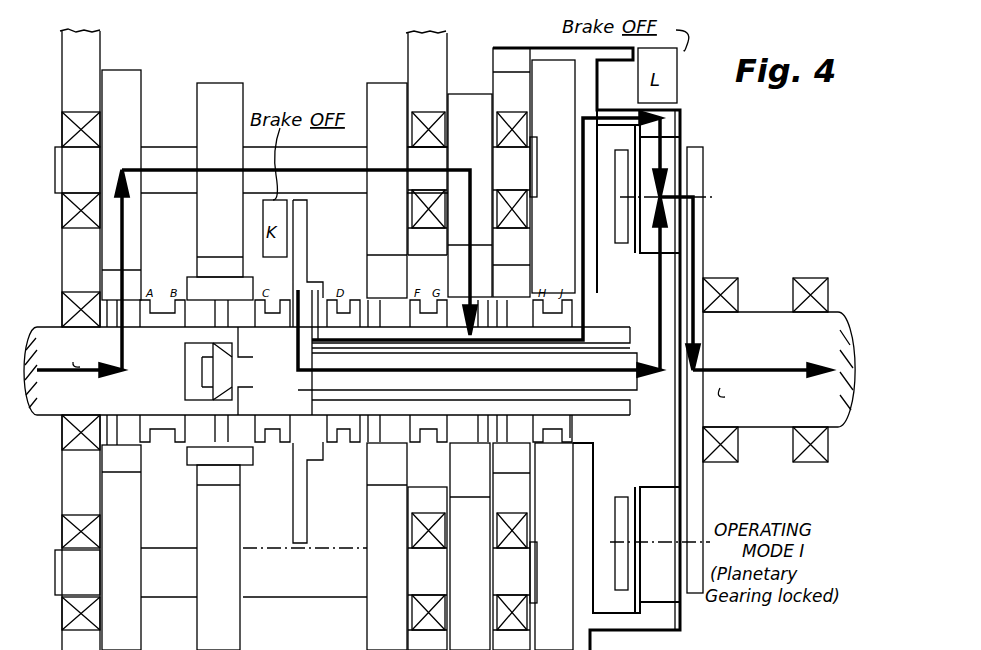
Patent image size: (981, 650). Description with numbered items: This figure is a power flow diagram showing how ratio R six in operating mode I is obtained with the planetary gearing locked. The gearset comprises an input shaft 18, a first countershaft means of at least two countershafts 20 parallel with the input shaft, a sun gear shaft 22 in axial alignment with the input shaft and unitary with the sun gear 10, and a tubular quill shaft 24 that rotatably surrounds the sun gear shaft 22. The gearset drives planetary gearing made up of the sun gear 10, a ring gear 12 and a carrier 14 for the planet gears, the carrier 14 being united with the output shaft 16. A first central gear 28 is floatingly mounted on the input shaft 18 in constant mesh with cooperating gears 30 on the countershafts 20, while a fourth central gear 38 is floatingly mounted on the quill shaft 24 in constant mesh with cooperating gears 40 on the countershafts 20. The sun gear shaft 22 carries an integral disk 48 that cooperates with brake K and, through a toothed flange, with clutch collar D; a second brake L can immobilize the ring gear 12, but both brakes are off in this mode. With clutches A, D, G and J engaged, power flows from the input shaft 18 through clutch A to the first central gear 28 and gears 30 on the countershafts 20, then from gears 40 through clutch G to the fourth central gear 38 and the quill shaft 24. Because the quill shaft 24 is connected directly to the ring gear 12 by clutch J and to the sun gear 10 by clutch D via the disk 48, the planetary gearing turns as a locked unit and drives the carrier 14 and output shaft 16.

The sun gear 10 is at (670, 273).
The ring gear 12 is at (680, 128).
The carrier 14 is at (696, 183).
The output shaft 16 is at (770, 418).
The input shaft 18 is at (52, 400).
The countershafts 20 is at (293, 148).
The sun gear shaft 22 is at (377, 378).
The tubular quill shaft 24 is at (598, 332).
The first central gear 28 is at (113, 278).
The cooperating gears 30 is at (133, 99).
The fourth central gear 38 is at (460, 268).
The cooperating gears 40 is at (464, 94).
The integral disk 48 is at (302, 248).